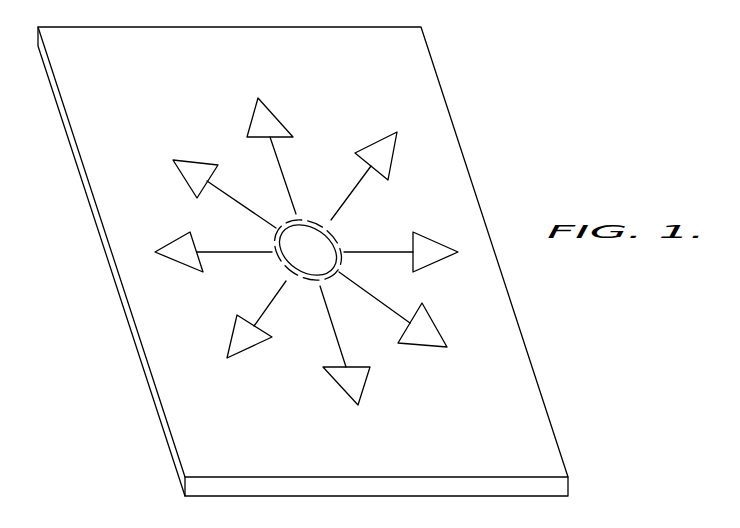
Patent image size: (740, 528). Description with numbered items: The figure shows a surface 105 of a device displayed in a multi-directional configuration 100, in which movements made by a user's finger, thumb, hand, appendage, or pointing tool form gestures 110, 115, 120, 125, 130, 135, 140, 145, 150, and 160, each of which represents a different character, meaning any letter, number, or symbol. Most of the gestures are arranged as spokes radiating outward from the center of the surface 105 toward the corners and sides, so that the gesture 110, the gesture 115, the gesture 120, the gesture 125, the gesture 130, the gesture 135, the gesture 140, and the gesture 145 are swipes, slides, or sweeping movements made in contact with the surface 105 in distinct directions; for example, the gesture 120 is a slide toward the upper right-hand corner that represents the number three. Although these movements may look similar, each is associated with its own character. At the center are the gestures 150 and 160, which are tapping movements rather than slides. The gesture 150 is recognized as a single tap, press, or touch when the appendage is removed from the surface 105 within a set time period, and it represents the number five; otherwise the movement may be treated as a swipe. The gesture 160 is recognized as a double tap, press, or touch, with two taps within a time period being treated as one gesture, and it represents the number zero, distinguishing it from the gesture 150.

The multi-directional configuration 100 is at (548, 128).
The surface 105 is at (360, 497).
The gesture 110 is at (185, 160).
The gesture 115 is at (270, 103).
The gesture 120 is at (393, 156).
The gesture 125 is at (433, 239).
The gesture 130 is at (435, 327).
The gesture 135 is at (363, 393).
The gesture 140 is at (246, 358).
The gesture 145 is at (172, 242).
The gesture 150 is at (316, 213).
The gesture 160 is at (306, 280).